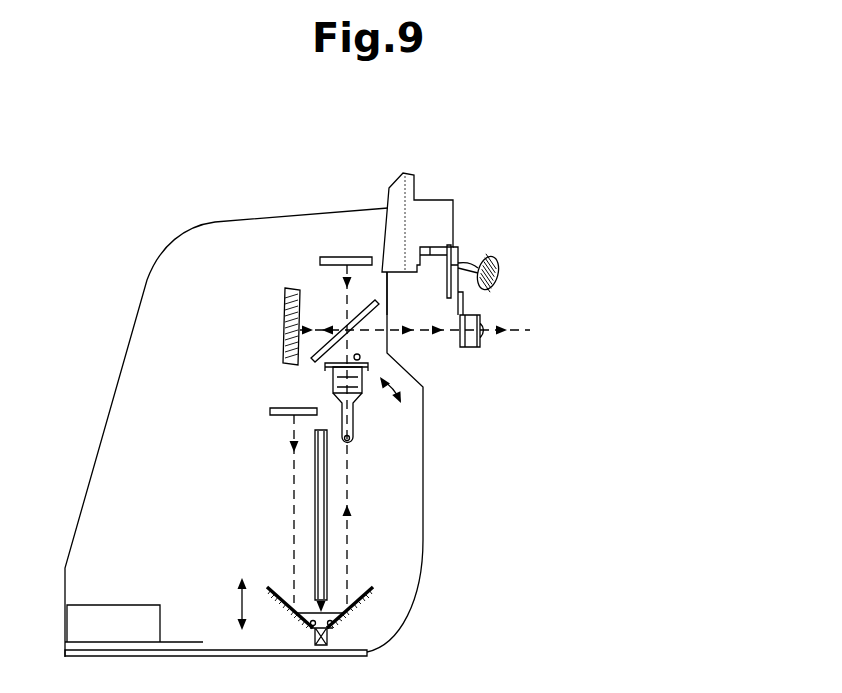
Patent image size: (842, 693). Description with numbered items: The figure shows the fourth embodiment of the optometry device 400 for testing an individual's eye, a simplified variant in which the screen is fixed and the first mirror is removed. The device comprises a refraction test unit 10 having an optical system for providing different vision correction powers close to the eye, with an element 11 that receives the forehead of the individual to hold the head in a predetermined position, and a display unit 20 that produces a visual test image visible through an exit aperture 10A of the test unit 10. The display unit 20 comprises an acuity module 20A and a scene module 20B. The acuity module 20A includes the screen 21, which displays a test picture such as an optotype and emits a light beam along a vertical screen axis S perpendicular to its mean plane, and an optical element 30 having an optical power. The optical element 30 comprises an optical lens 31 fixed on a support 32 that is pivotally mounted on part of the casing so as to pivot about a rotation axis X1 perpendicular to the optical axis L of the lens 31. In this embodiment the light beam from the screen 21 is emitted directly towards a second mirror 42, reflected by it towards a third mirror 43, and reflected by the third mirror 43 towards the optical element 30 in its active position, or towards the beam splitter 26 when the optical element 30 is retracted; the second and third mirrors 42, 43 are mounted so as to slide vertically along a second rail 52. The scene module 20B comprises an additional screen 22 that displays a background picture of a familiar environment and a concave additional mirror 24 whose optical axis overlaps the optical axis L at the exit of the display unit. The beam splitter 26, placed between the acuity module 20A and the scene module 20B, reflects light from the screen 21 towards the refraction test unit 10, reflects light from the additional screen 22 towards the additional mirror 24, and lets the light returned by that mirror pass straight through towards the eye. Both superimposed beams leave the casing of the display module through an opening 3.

The optometry device 400 is at (569, 254).
The opening 3 is at (387, 315).
The refraction test unit 10 is at (494, 362).
The exit aperture 10A is at (480, 317).
The element receiving the forehead 11 is at (498, 266).
The display unit 20 is at (432, 597).
The acuity module 20A is at (231, 499).
The scene module 20B is at (303, 236).
The screen 21 is at (270, 412).
The additional screen 22 is at (355, 257).
The additional mirror 24 is at (289, 288).
The beam splitter 26 is at (322, 362).
The optical element 30 is at (365, 403).
The optical lens 31 is at (358, 354).
The support 32 is at (355, 423).
The rotation axis X1 is at (355, 440).
The optical axis L is at (350, 468).
The screen axis S is at (293, 497).
The second rail 52 is at (318, 527).
The second mirror 42 is at (277, 590).
The third mirror 43 is at (372, 590).